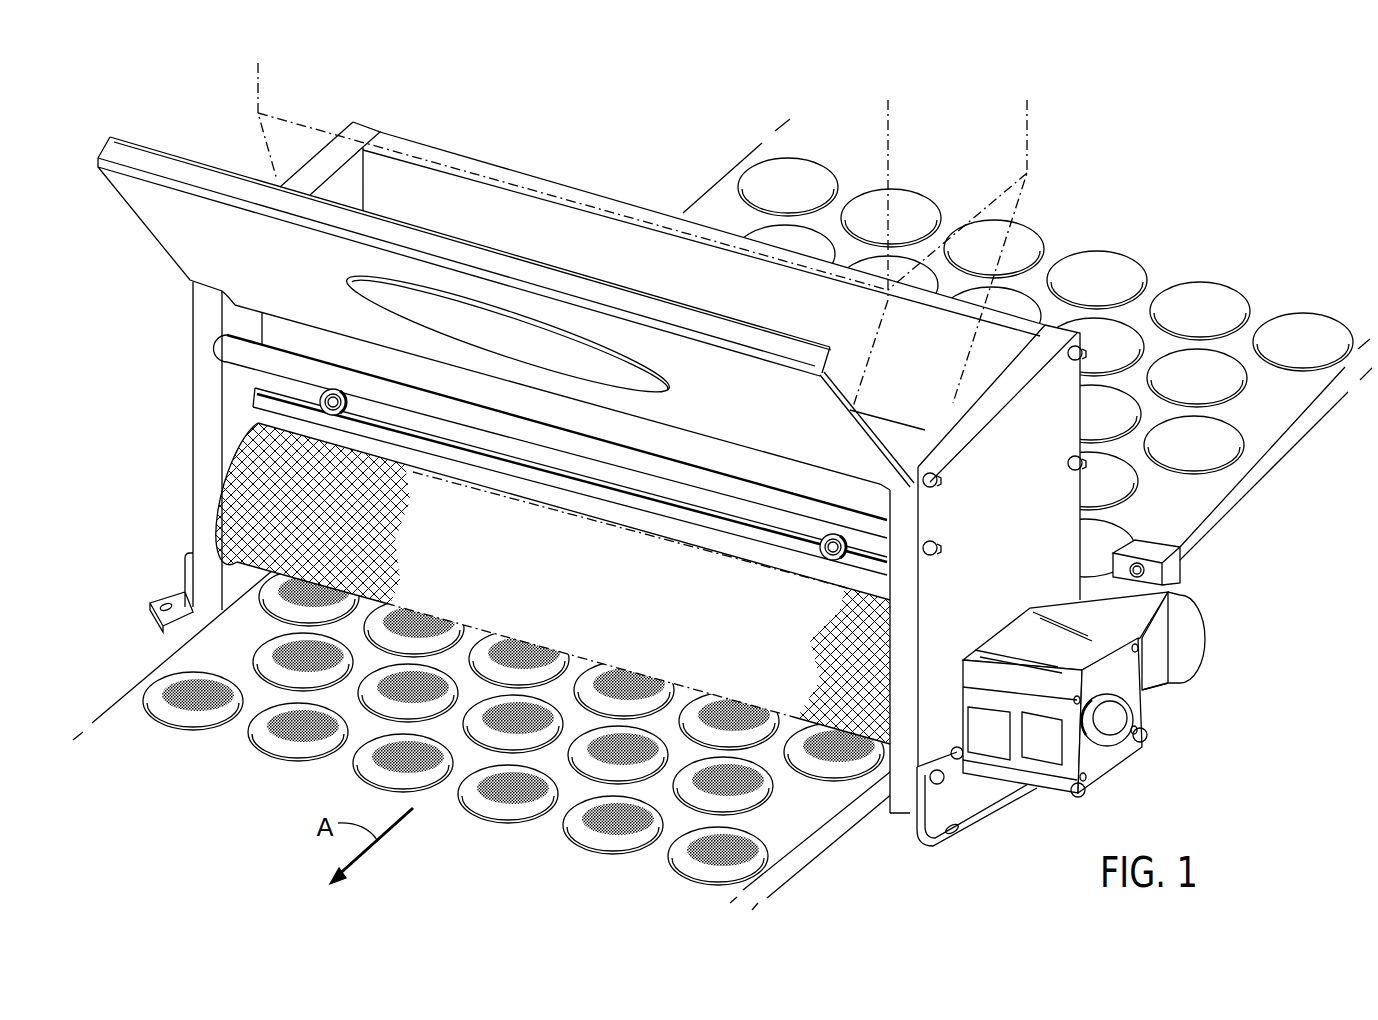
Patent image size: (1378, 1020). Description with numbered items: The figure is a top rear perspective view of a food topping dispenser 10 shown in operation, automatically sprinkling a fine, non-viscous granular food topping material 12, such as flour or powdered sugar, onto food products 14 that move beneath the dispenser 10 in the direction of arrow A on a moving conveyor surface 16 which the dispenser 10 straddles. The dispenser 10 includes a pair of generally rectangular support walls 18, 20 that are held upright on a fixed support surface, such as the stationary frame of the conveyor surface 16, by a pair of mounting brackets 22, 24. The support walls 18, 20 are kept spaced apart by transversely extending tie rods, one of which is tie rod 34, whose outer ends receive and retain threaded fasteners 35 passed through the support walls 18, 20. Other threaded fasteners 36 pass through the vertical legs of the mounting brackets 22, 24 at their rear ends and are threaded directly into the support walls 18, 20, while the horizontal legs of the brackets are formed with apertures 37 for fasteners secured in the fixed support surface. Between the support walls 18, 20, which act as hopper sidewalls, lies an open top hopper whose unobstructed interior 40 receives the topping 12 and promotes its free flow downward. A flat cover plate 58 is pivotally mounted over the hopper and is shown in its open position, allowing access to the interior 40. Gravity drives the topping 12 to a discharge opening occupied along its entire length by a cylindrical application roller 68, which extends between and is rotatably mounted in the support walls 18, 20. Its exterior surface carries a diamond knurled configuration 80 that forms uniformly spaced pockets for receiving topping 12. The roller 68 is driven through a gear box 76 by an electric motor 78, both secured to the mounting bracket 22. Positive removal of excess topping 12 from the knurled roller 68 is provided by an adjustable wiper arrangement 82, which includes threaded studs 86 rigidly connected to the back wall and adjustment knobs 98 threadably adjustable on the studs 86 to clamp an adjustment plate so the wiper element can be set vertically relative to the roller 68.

The food topping dispenser 10 is at (620, 148).
The food topping material 12 is at (504, 779).
The food product 14 is at (1103, 270).
The moving conveyor surface 16 is at (797, 823).
The support wall 18 is at (1047, 528).
The support wall 20 is at (208, 388).
The mounting bracket 22 is at (987, 800).
The mounting bracket 24 is at (160, 612).
The tie rod 34 is at (743, 467).
The threaded fastener 35 is at (938, 480).
The threaded fastener 36 is at (957, 750).
The aperture 37 is at (957, 832).
The interior 40 is at (900, 390).
The cover plate 58 is at (170, 230).
The application roller 68 is at (633, 560).
The gear box 76 is at (1093, 757).
The electric motor 78 is at (1160, 663).
The diamond knurled configuration 80 is at (240, 518).
The wiper arrangement 82 is at (315, 375).
The stud 86 is at (322, 403).
The adjustment knob 98 is at (333, 390).